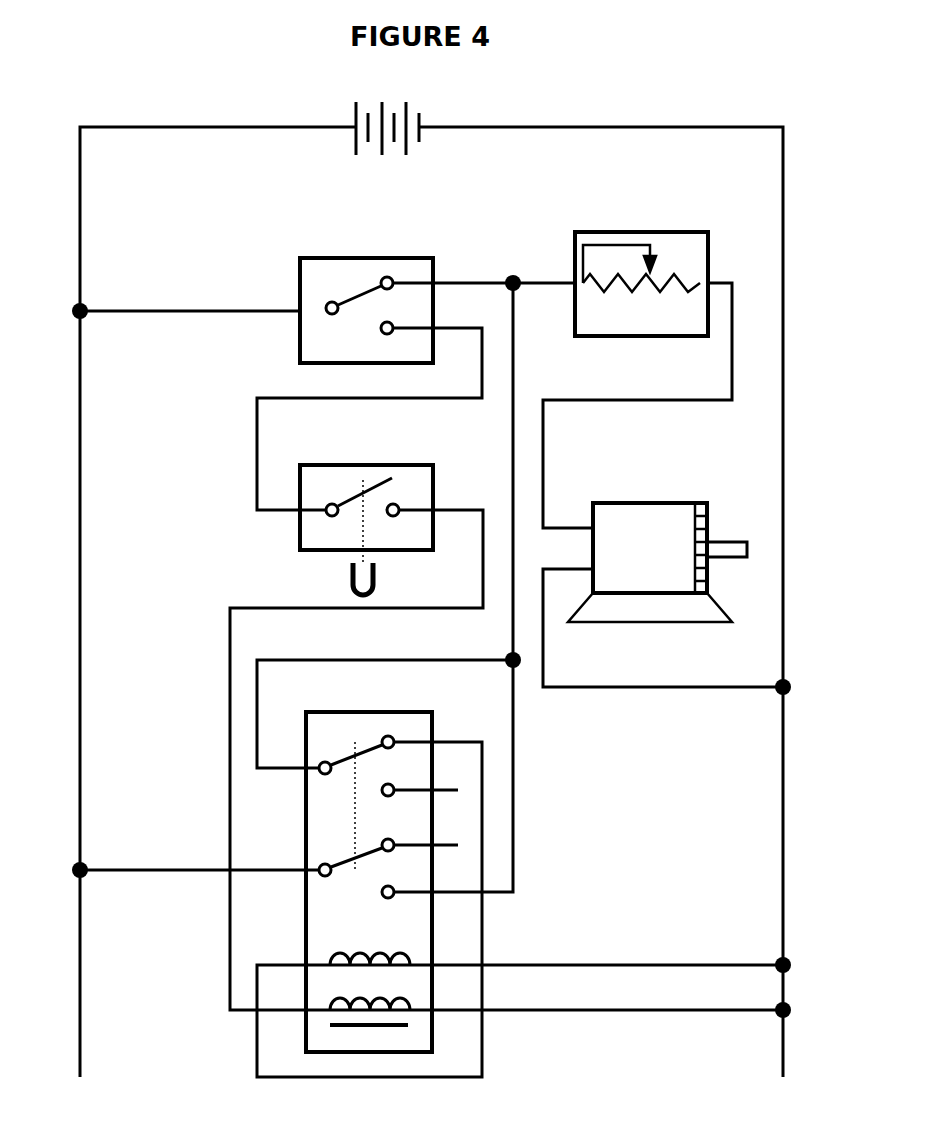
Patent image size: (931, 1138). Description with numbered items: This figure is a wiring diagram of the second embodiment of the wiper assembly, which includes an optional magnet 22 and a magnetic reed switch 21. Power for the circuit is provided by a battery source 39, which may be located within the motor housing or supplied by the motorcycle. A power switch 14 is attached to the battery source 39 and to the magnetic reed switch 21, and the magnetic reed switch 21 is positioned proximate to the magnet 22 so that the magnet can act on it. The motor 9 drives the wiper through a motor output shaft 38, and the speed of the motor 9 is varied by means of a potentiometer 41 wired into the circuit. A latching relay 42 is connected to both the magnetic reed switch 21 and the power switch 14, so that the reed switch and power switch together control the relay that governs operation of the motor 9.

The battery source 39 is at (373, 160).
The power switch 14 is at (423, 253).
The potentiometer 41 is at (605, 228).
The magnetic reed switch 21 is at (420, 462).
The magnet 22 is at (380, 592).
The motor 9 is at (648, 502).
The motor shaft 38 is at (726, 538).
The latching relay 42 is at (303, 843).